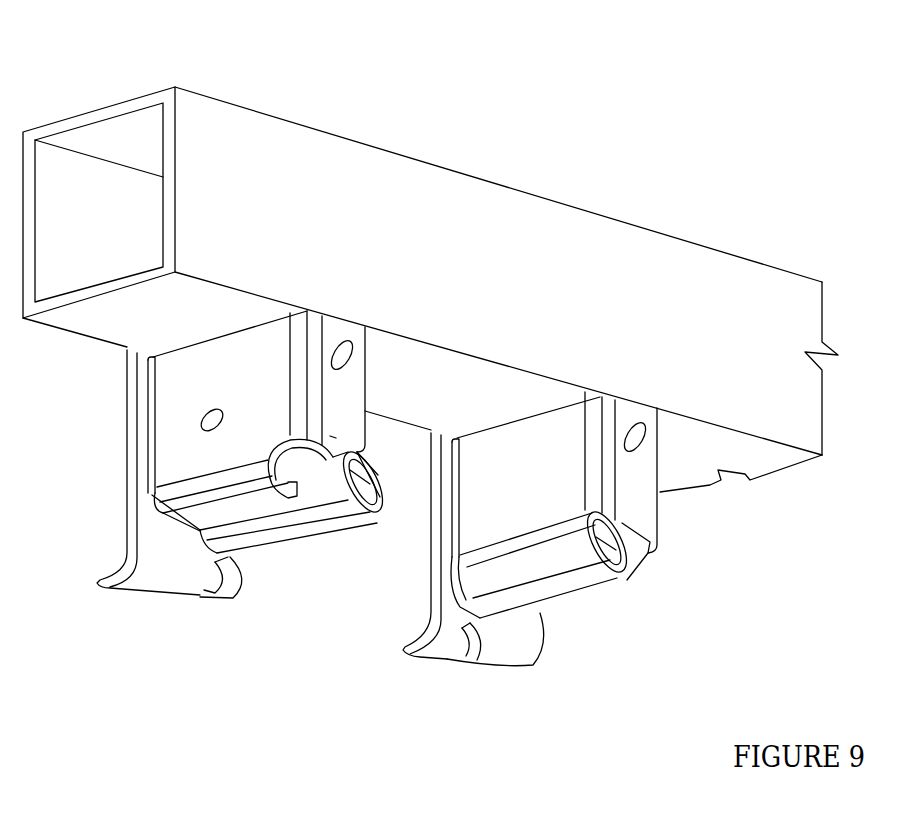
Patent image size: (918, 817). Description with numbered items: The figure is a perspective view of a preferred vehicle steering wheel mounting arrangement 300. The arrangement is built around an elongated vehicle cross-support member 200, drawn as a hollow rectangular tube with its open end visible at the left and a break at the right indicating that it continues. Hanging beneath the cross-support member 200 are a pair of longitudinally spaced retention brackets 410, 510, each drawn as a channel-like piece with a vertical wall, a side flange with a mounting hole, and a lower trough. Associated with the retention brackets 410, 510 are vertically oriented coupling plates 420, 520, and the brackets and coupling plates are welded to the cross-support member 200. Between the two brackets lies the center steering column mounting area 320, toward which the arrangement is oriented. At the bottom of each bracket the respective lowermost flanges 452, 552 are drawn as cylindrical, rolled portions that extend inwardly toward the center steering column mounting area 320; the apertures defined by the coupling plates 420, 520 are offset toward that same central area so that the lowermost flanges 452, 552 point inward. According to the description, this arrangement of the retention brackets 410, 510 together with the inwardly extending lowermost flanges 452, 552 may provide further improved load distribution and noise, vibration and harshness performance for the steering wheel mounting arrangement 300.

The vehicle steering wheel mounting arrangement 300 is at (604, 90).
The vehicle cross-support member 200 is at (697, 282).
The retention bracket 410 is at (203, 494).
The coupling plate 420 is at (162, 594).
The lowermost flange 452 is at (200, 500).
The center steering column mounting area 320 is at (368, 530).
The retention bracket 510 is at (621, 529).
The coupling plate 520 is at (530, 633).
The lowermost flange 552 is at (625, 578).